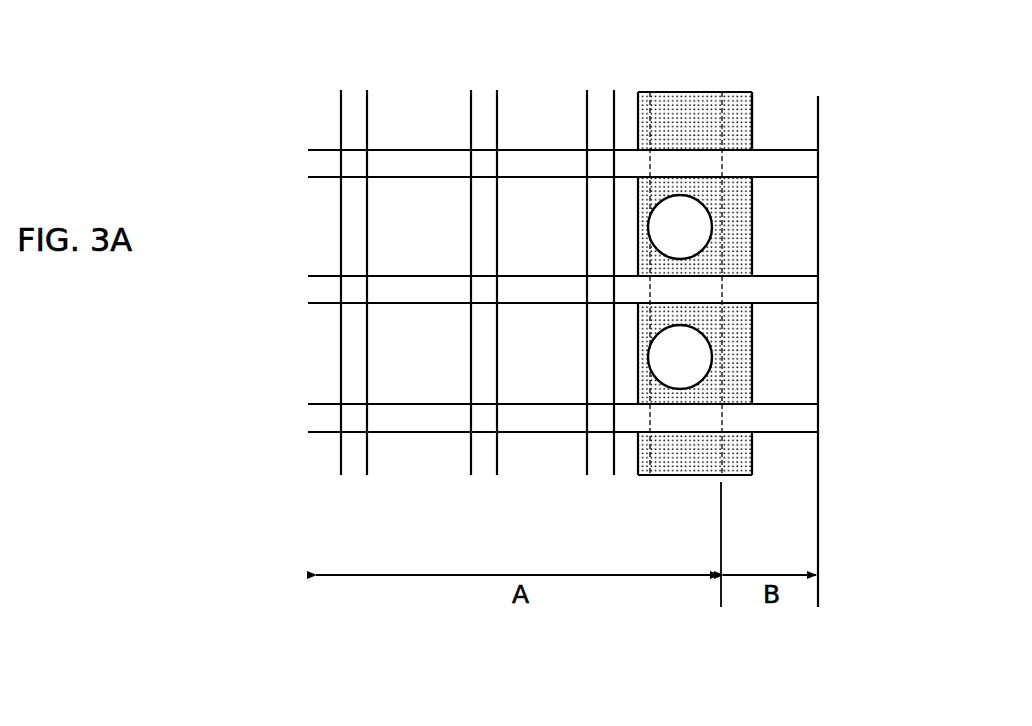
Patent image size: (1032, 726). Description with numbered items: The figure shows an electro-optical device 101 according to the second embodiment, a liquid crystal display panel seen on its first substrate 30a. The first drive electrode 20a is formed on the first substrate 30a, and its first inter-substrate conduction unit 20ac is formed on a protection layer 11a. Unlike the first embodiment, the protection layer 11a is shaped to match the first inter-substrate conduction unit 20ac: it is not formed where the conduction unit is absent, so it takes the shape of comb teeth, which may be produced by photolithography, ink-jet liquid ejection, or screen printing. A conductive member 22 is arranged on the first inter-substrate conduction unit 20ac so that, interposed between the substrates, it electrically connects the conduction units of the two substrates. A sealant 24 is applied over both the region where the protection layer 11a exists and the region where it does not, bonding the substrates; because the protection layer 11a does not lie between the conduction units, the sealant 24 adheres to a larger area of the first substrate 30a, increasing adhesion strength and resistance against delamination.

The electro-optical device 101 is at (335, 93).
The first drive electrode 20a is at (633, 481).
The first inter-substrate conduction unit 20ac is at (718, 481).
The conductive member 22 is at (680, 357).
The sealant 24 is at (738, 92).
The protection layer 11a is at (753, 128).
The first substrate 30a is at (818, 370).